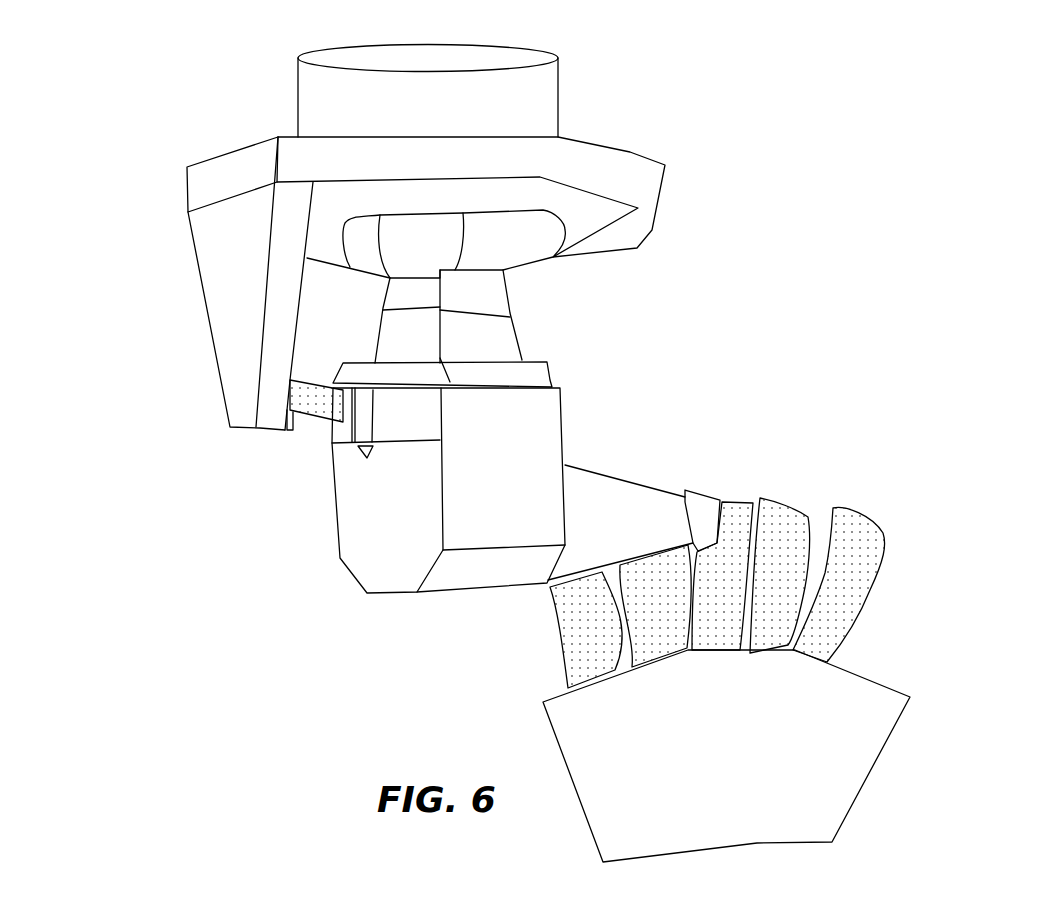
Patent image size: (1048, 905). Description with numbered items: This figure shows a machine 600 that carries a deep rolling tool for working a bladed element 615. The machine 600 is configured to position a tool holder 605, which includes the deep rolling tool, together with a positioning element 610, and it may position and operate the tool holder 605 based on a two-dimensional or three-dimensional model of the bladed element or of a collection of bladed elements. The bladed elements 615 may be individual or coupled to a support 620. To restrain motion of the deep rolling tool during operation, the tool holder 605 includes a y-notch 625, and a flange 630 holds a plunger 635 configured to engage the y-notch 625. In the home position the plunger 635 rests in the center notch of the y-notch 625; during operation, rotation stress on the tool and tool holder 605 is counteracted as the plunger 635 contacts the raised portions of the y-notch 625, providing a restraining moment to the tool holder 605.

The machine 600 is at (96, 150).
The positioning element 610 is at (360, 75).
The flange 630 is at (204, 288).
The plunger 635 is at (314, 375).
The y-notch 625 is at (338, 443).
The tool holder 605 is at (395, 538).
The bladed element 615 is at (780, 518).
The support 620 is at (835, 783).